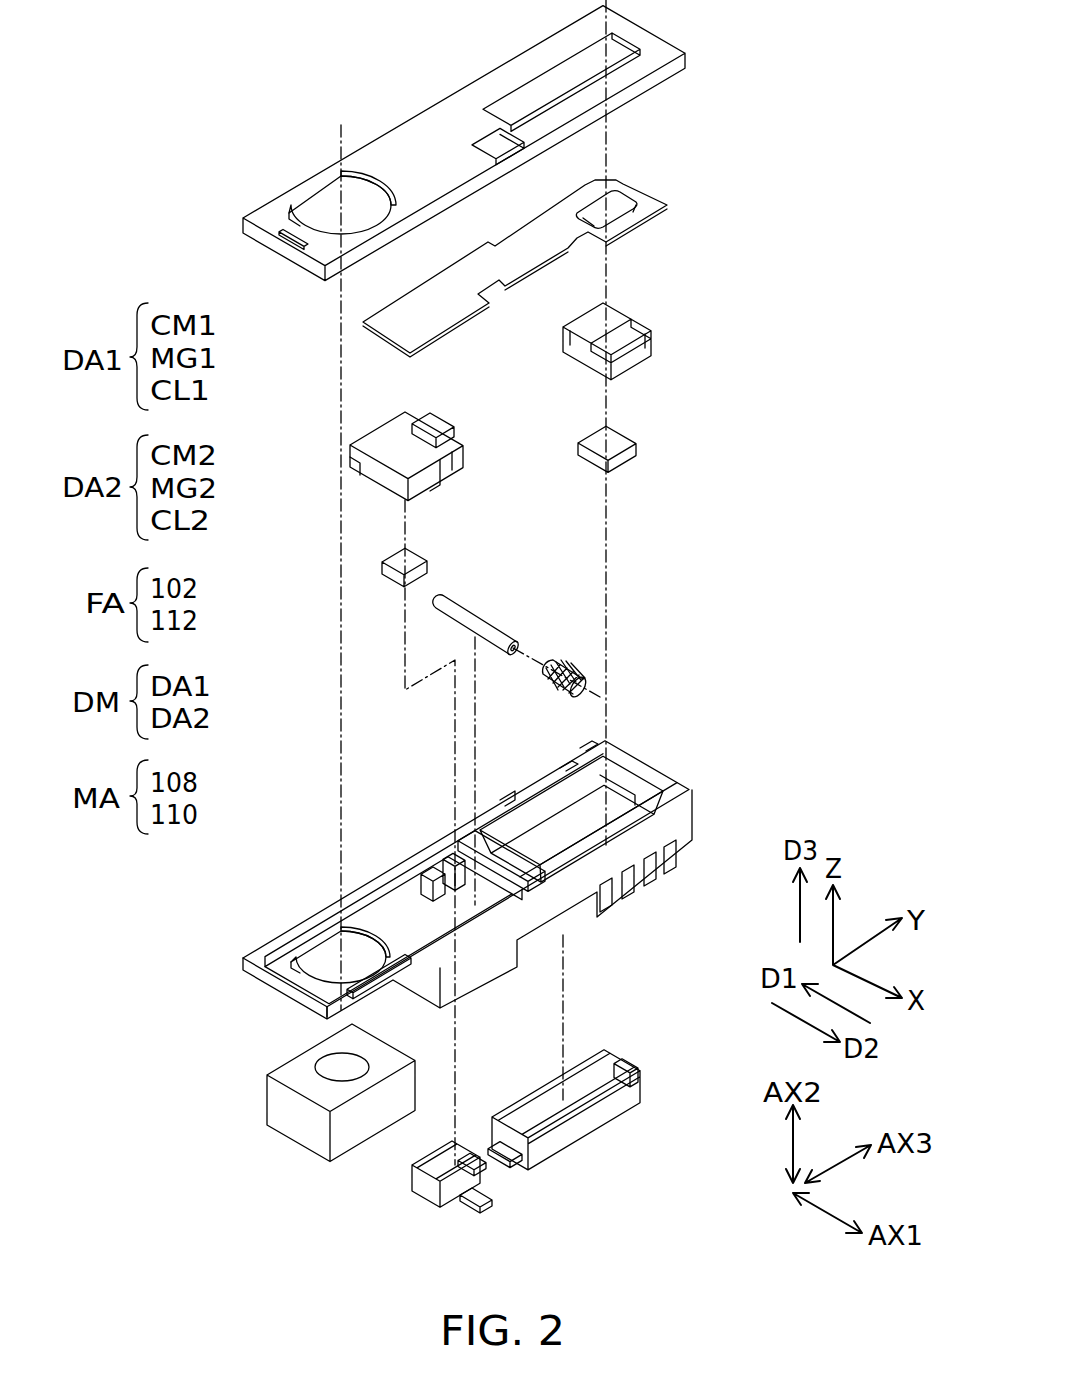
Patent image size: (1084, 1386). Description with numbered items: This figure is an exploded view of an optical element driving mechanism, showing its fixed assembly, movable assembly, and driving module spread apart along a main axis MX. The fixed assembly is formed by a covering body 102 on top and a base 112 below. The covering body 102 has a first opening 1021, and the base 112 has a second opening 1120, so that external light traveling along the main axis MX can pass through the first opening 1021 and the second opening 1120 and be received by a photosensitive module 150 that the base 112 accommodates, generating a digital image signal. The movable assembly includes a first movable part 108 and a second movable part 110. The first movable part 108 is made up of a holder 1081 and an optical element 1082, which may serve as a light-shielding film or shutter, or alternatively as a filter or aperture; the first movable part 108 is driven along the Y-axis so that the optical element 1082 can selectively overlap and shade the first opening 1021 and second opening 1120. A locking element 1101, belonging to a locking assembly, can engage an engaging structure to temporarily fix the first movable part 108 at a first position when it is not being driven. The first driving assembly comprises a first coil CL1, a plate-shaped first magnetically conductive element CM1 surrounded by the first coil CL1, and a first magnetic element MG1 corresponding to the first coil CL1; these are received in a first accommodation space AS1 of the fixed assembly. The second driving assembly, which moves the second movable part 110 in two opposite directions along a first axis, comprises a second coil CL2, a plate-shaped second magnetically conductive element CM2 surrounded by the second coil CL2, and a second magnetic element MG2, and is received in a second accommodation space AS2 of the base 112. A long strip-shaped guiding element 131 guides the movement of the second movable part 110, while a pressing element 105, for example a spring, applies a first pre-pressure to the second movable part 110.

The covering body 102 is at (442, 143).
The first opening 1021 is at (312, 196).
The first movable part 108 is at (610, 280).
The optical element 1082 is at (672, 210).
The holder 1081 is at (672, 341).
The second movable part 110 is at (449, 431).
The locking element 1101 is at (452, 430).
The first magnetic element MG1 is at (638, 446).
The second magnetic element MG2 is at (415, 563).
The guiding element 131 is at (493, 635).
The pressing element 105 is at (565, 665).
The base 112 is at (501, 868).
The first accommodation space AS1 is at (632, 795).
The second accommodation space AS2 is at (498, 895).
The second opening 1120 is at (320, 952).
The photosensitive module 150 is at (280, 1110).
The first coil CL1 is at (585, 1102).
The first magnetically conductive element CM1 is at (505, 1152).
The second coil CL2 is at (430, 1175).
The second magnetically conductive element CM2 is at (473, 1200).
The main axis MX is at (462, 582).